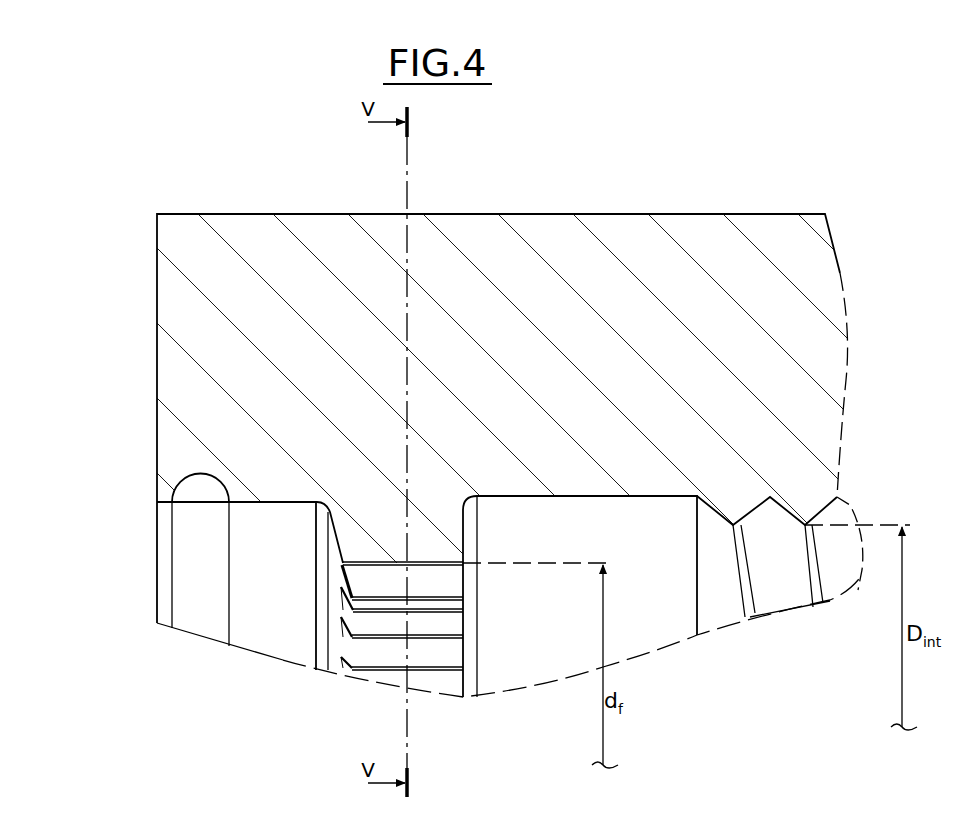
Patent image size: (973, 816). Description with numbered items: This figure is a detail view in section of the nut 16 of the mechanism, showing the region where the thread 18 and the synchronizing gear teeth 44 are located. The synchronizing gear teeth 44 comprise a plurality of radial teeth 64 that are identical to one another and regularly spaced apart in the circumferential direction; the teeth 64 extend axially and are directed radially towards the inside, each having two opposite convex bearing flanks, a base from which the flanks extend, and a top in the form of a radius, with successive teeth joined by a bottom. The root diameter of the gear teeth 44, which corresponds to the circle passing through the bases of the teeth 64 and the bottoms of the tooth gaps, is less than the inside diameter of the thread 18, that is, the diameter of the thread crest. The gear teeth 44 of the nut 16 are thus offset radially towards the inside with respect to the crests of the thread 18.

The rotor disk 16 is at (690, 212).
The thread 18 is at (772, 503).
The synchronizing gear teeth 44 is at (332, 622).
The radial teeth 64 is at (373, 620).